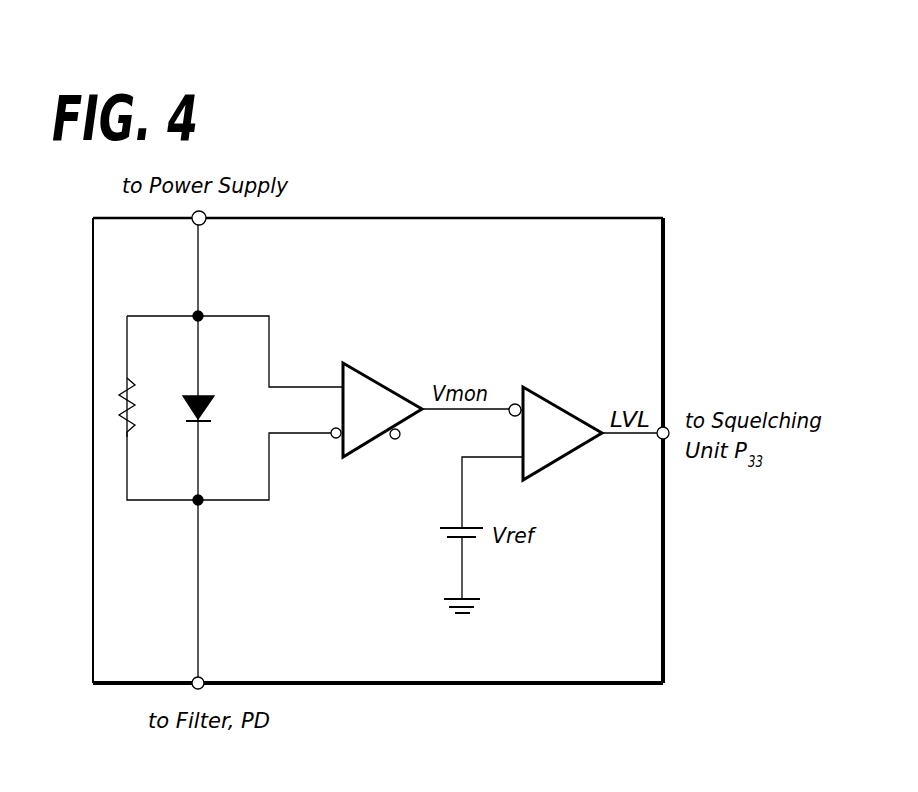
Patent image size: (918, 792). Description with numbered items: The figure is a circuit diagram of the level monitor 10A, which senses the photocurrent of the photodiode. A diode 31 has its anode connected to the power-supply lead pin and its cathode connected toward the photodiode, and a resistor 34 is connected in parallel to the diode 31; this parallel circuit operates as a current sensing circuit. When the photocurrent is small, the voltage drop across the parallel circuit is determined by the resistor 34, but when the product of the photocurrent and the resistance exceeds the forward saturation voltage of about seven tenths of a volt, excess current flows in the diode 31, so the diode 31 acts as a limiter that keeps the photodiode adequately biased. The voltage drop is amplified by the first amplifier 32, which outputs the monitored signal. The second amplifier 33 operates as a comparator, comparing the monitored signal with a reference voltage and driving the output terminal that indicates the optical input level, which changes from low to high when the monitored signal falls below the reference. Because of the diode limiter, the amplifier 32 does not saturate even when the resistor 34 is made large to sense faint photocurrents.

The level monitor 10A is at (665, 258).
The diode 31 is at (243, 378).
The first amplifier 32 is at (372, 380).
The second amplifier 33 is at (552, 402).
The resistor 34 is at (131, 436).